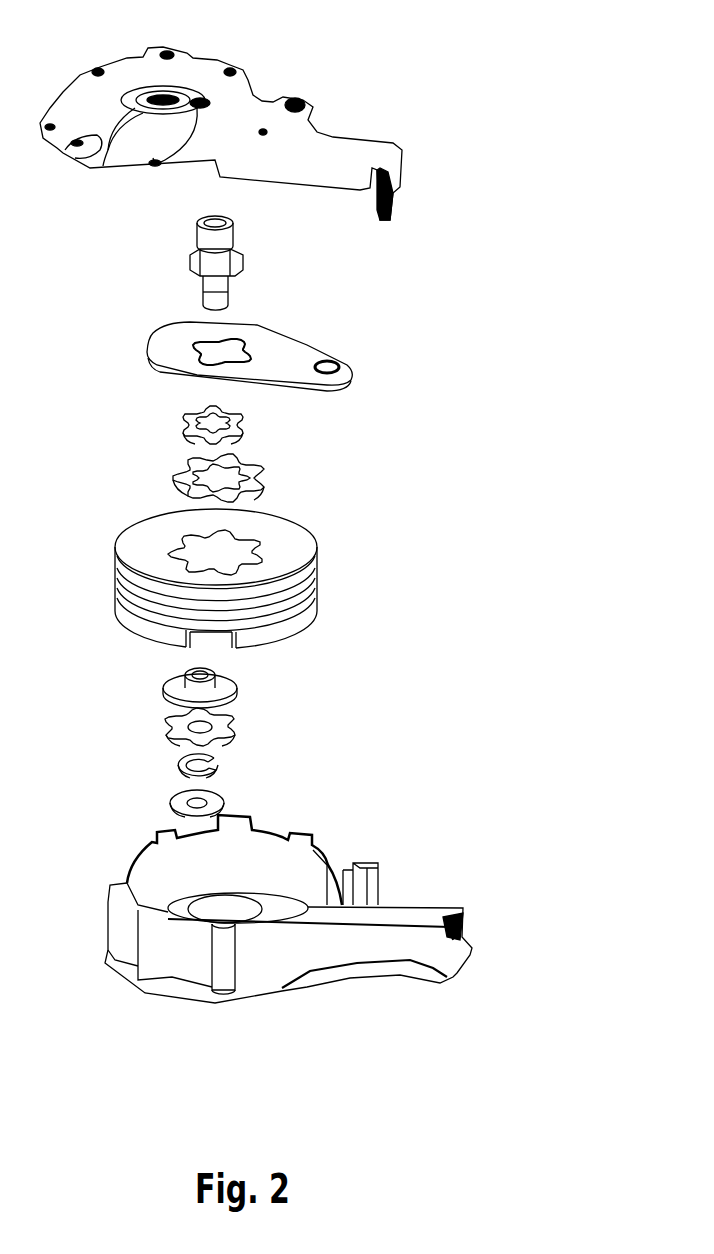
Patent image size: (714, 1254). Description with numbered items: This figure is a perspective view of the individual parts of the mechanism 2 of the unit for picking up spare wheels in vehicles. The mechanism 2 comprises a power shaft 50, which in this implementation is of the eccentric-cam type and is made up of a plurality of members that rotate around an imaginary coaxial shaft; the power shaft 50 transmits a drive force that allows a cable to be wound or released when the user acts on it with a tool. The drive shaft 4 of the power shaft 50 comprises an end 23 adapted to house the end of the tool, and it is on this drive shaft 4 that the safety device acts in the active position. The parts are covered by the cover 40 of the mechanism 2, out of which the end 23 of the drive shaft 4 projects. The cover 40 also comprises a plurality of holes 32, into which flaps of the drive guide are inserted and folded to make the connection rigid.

The mechanism 2 is at (522, 95).
The drive shaft 4 is at (157, 290).
The end 23 is at (233, 232).
The holes 32 is at (92, 155).
The cover 40 is at (253, 97).
The power shaft 50 is at (492, 441).